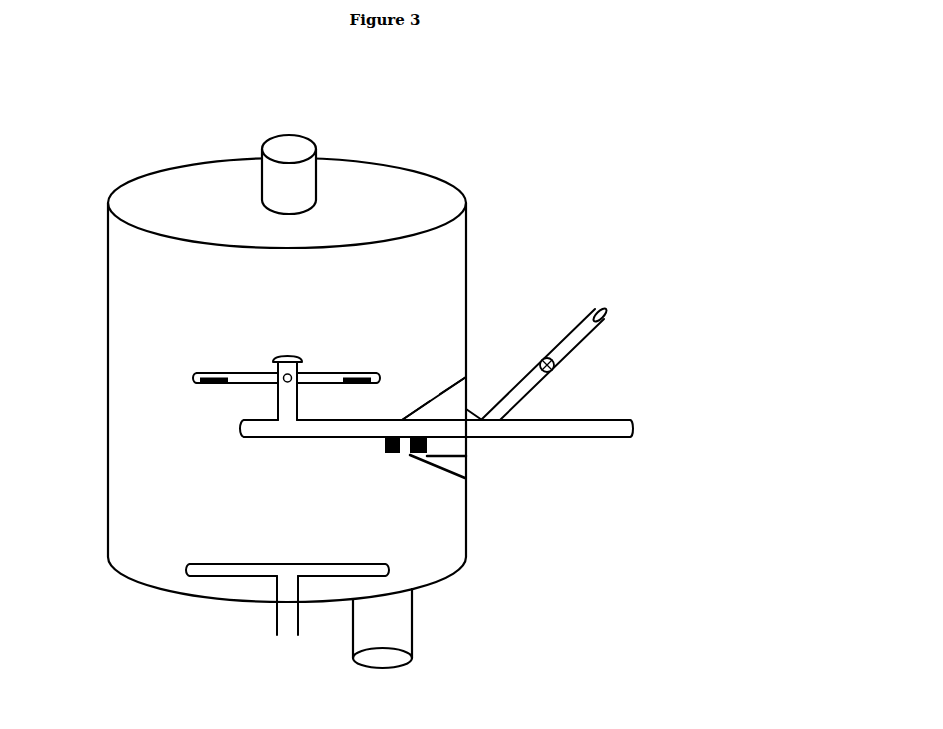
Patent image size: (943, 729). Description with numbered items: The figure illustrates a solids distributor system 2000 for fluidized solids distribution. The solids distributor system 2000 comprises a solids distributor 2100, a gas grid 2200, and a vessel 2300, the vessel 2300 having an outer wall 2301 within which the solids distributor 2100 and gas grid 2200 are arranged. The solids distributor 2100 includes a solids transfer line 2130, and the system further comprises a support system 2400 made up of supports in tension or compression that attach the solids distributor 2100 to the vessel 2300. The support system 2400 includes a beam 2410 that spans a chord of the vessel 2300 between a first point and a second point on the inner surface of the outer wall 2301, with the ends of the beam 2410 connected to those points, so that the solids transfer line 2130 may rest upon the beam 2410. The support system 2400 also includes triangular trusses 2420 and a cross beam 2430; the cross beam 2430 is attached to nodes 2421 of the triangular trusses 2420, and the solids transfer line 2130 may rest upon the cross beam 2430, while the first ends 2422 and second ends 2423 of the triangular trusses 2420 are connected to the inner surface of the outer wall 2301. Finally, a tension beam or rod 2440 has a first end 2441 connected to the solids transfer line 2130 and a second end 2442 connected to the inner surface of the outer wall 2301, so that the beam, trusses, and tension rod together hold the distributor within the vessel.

The solids distributor system 2000 is at (772, 108).
The solids distributor 2100 is at (187, 355).
The solids transfer line 2130 is at (320, 444).
The gas grid 2200 is at (307, 592).
The vessel 2300 is at (105, 243).
The outer wall 2301 is at (105, 507).
The support system 2400 is at (478, 500).
The beam 2410 is at (383, 452).
The triangular trusses 2420 is at (437, 470).
The nodes 2421 is at (410, 457).
The first ends 2422 is at (467, 457).
The second ends 2423 is at (467, 472).
The cross beam 2430 is at (427, 445).
The tension beam or rod 2440 is at (425, 385).
The first end 2441 is at (400, 410).
The second end 2442 is at (457, 375).